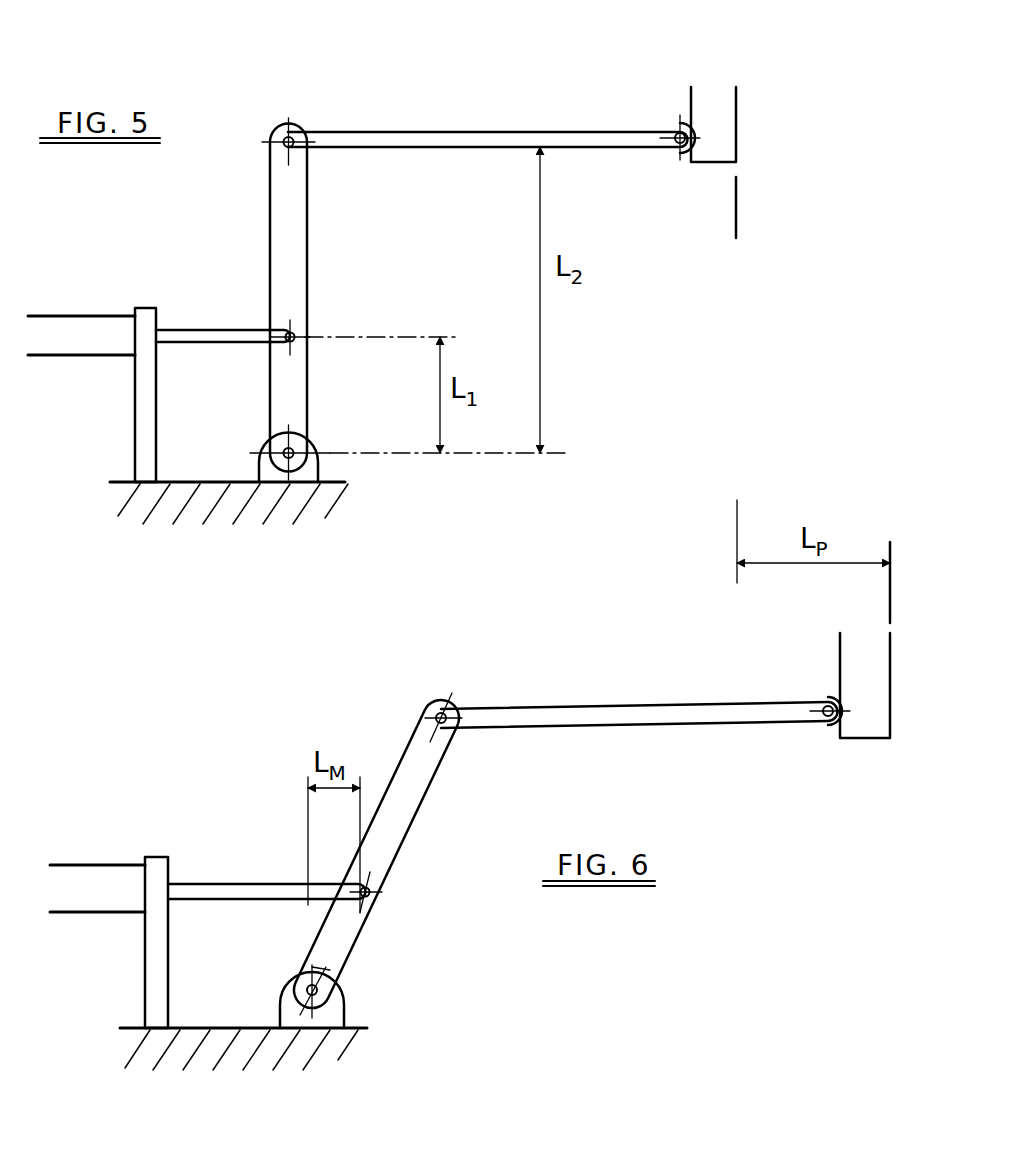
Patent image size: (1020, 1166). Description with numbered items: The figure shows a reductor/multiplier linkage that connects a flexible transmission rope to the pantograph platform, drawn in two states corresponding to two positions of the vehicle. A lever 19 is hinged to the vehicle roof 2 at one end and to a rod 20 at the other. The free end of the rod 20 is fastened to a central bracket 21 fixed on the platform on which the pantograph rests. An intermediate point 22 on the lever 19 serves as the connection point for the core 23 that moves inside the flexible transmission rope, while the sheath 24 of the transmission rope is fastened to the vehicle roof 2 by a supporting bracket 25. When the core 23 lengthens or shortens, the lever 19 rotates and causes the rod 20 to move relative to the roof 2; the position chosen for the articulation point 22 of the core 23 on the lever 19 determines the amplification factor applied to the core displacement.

In FIG. 5, the vehicle roof 2 is at (248, 505).
In FIG. 6, the vehicle roof 2 is at (260, 1048).
In FIG. 5, the lever 19 is at (303, 249).
In FIG. 6, the lever 19 is at (415, 765).
In FIG. 5, the rod 20 is at (488, 130).
In FIG. 6, the rod 20 is at (680, 708).
In FIG. 5, the central bracket 21 is at (722, 133).
In FIG. 6, the central bracket 21 is at (865, 672).
In FIG. 5, the intermediate point 22 is at (307, 330).
In FIG. 5, the core 23 is at (235, 328).
In FIG. 6, the core 23 is at (233, 884).
In FIG. 5, the sheath 24 is at (90, 313).
In FIG. 6, the sheath 24 is at (108, 890).
In FIG. 5, the supporting bracket 25 is at (135, 412).
In FIG. 6, the supporting bracket 25 is at (158, 953).